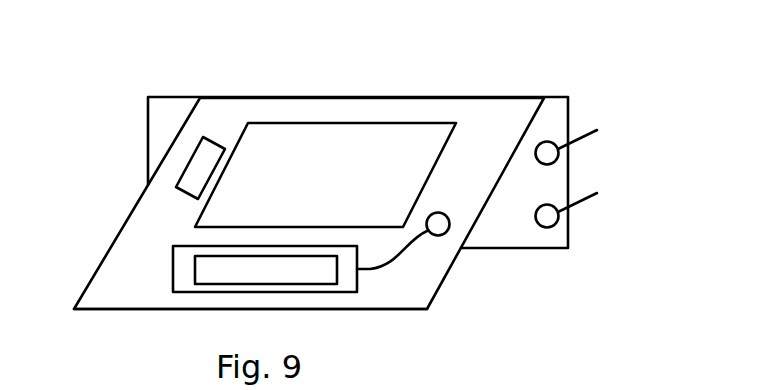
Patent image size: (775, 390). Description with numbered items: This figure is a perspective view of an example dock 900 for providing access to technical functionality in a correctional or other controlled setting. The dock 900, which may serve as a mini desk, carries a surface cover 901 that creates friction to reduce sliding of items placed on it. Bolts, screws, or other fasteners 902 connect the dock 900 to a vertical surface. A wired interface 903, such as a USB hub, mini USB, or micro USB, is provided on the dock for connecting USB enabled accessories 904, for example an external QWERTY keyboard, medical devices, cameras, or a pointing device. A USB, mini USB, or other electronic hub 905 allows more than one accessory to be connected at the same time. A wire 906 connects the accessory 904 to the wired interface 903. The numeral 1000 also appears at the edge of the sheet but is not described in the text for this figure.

The dock 900 is at (639, 86).
The surface cover 901 is at (311, 146).
The fasteners 902 is at (600, 201).
The wired interface 903 is at (442, 240).
The USB enabled accessories 904 is at (304, 295).
The electronic hub 905 is at (189, 159).
The wire 906 is at (406, 287).
The adjacent figure reference 1000 is at (643, 386).